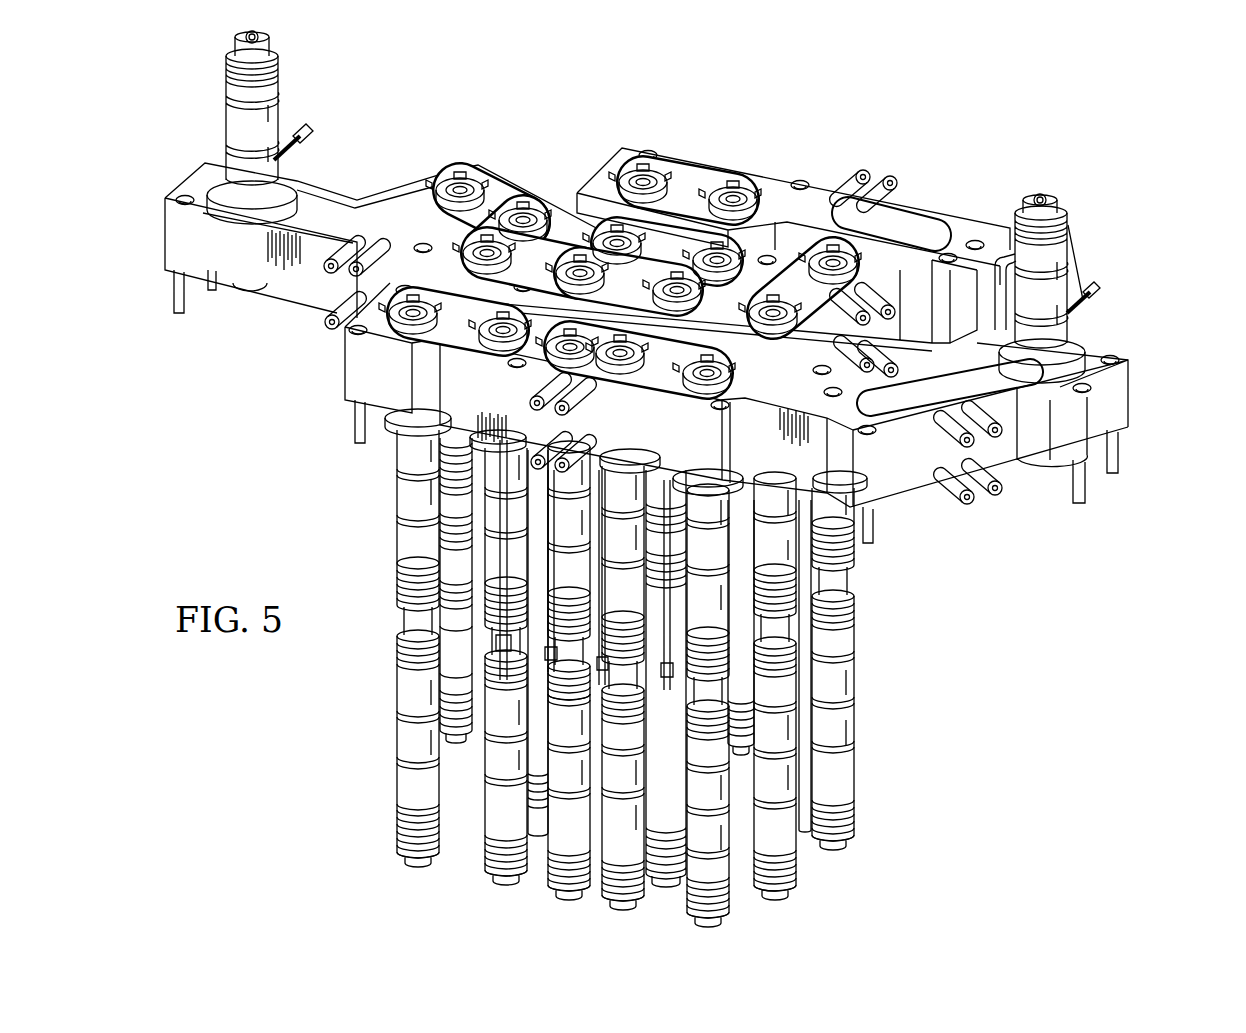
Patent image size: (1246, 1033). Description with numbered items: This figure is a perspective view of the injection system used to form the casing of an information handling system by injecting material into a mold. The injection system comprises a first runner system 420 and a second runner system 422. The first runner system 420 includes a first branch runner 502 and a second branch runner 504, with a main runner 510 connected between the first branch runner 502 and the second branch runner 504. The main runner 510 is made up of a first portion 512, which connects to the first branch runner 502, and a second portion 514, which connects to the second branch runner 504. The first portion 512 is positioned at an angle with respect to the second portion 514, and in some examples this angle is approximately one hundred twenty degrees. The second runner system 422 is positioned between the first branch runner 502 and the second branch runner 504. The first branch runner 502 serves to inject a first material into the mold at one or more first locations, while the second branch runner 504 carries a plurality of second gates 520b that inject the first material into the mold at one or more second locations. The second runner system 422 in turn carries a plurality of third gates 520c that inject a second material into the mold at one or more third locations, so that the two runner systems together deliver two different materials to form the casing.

The first runner system 420 is at (1107, 253).
The second runner system 422 is at (168, 161).
The first branch runner 502 is at (836, 170).
The second branch runner 504 is at (335, 377).
The main runner 510 is at (1142, 453).
The first portion 512 is at (1112, 330).
The second portion 514 is at (987, 517).
The second gates 520b is at (680, 907).
The third gates 520c is at (868, 826).